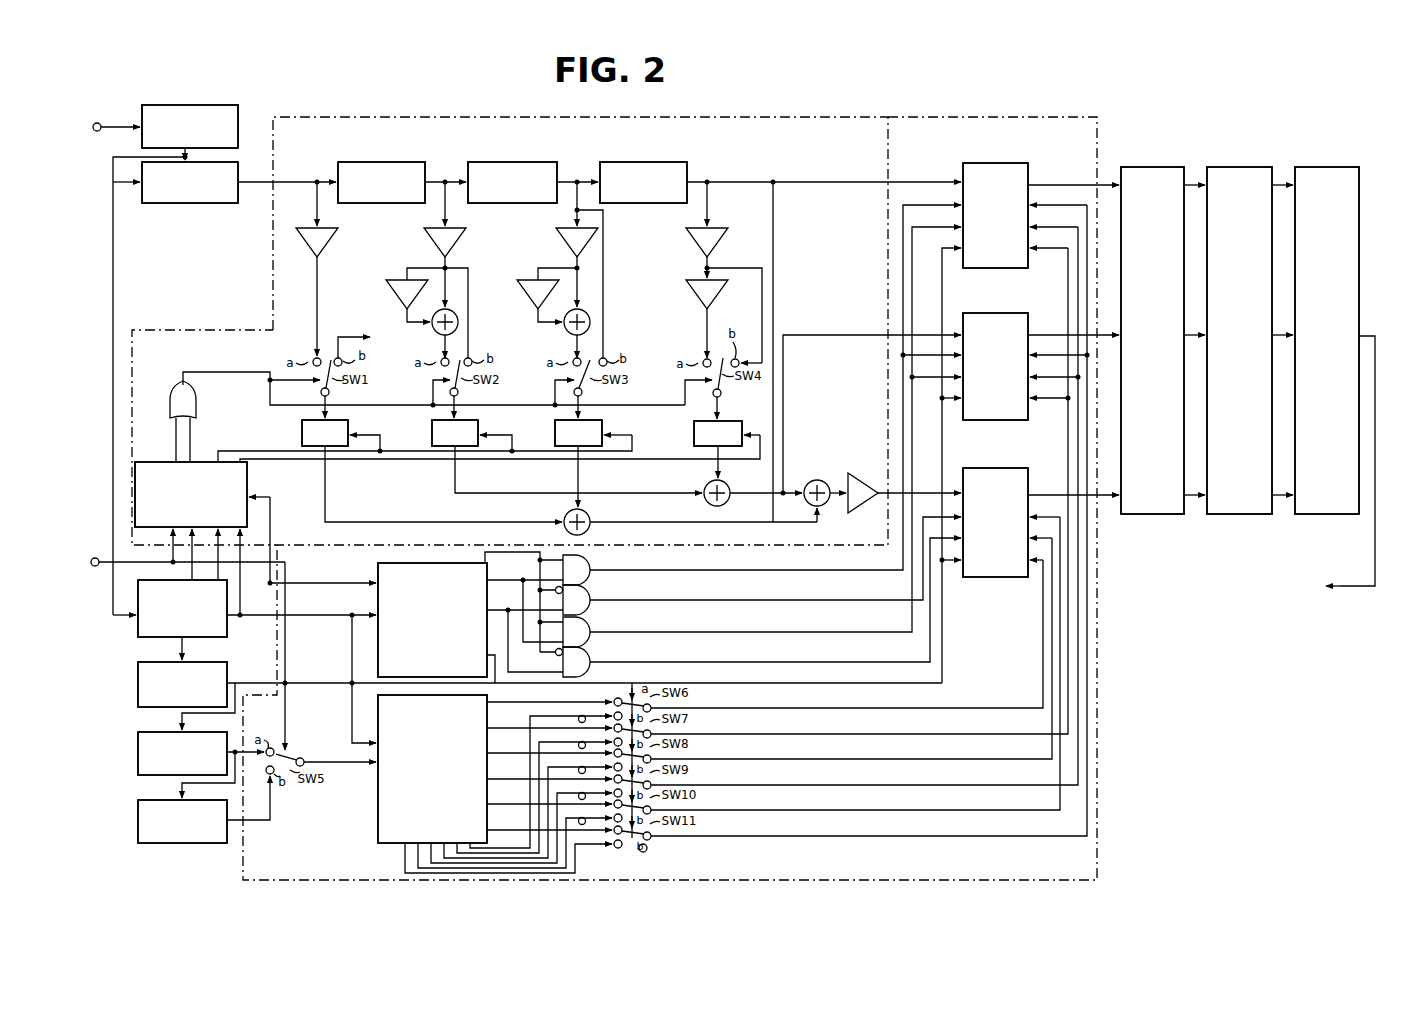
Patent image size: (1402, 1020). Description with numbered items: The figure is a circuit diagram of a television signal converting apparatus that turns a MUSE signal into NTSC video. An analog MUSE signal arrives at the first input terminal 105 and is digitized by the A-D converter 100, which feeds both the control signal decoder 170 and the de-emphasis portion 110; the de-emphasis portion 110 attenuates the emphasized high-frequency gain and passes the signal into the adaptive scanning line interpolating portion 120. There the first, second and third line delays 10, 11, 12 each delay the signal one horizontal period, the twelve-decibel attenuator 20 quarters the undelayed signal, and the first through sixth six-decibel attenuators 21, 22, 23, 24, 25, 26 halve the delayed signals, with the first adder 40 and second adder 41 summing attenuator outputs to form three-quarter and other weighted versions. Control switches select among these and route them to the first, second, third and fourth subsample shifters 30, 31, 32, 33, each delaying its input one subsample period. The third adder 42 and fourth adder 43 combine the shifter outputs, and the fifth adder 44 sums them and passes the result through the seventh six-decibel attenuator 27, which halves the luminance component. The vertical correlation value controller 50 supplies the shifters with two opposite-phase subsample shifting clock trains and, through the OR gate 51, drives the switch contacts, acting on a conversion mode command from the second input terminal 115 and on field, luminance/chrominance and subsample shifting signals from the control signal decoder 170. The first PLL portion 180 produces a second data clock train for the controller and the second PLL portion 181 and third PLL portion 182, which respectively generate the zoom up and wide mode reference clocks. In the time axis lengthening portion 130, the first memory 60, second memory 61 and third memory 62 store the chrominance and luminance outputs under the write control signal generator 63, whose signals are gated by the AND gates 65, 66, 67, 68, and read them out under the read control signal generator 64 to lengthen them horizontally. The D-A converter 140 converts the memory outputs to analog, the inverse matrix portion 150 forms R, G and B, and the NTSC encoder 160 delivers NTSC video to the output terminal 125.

The first input terminal 105 is at (97, 123).
The A-D converter 100 is at (238, 106).
The de-emphasis portion 110 is at (190, 203).
The adaptive scanning line interpolating portion 120 is at (313, 118).
The time axis lengthening portion 130 is at (975, 118).
The first line delay 10 is at (375, 162).
The second line delay 11 is at (520, 162).
The third line delay 12 is at (643, 162).
The 12 dB attenuator 20 is at (325, 236).
The first 6 dB attenuator 21 is at (453, 236).
The second 6 dB attenuator 22 is at (392, 284).
The third 6 dB attenuator 23 is at (585, 236).
The fourth 6 dB attenuator 24 is at (523, 284).
The fifth 6 dB attenuator 25 is at (715, 236).
The sixth 6 dB attenuator 26 is at (692, 284).
The seventh 6 dB attenuator 27 is at (860, 470).
The first adder 40 is at (456, 316).
The second adder 41 is at (588, 316).
The third adder 42 is at (588, 516).
The fourth adder 43 is at (728, 487).
The fifth adder 44 is at (817, 480).
The first subsample shifter 30 is at (340, 421).
The second subsample shifter 31 is at (472, 421).
The third subsample shifter 32 is at (596, 421).
The fourth subsample shifter 33 is at (735, 422).
The vertical correlation value controller 50 is at (247, 475).
The OR gate 51 is at (197, 404).
The second input terminal 115 is at (97, 557).
The control signal decoder 170 is at (227, 630).
The first PLL portion 180 is at (227, 664).
The second PLL portion 181 is at (138, 735).
The third PLL portion 182 is at (138, 818).
The first memory 60 is at (1000, 163).
The second memory 61 is at (1000, 313).
The third memory 62 is at (1000, 468).
The write control signal generator 63 is at (487, 563).
The read control signal generator 64 is at (378, 822).
The AND gate 65 is at (591, 557).
The AND gate 66 is at (591, 589).
The AND gate 67 is at (591, 619).
The AND gate 68 is at (591, 649).
The D-A converter 140 is at (1130, 167).
The inverse matrix portion 150 is at (1216, 167).
The NTSC encoder 160 is at (1304, 167).
The output terminal 125 is at (1338, 590).